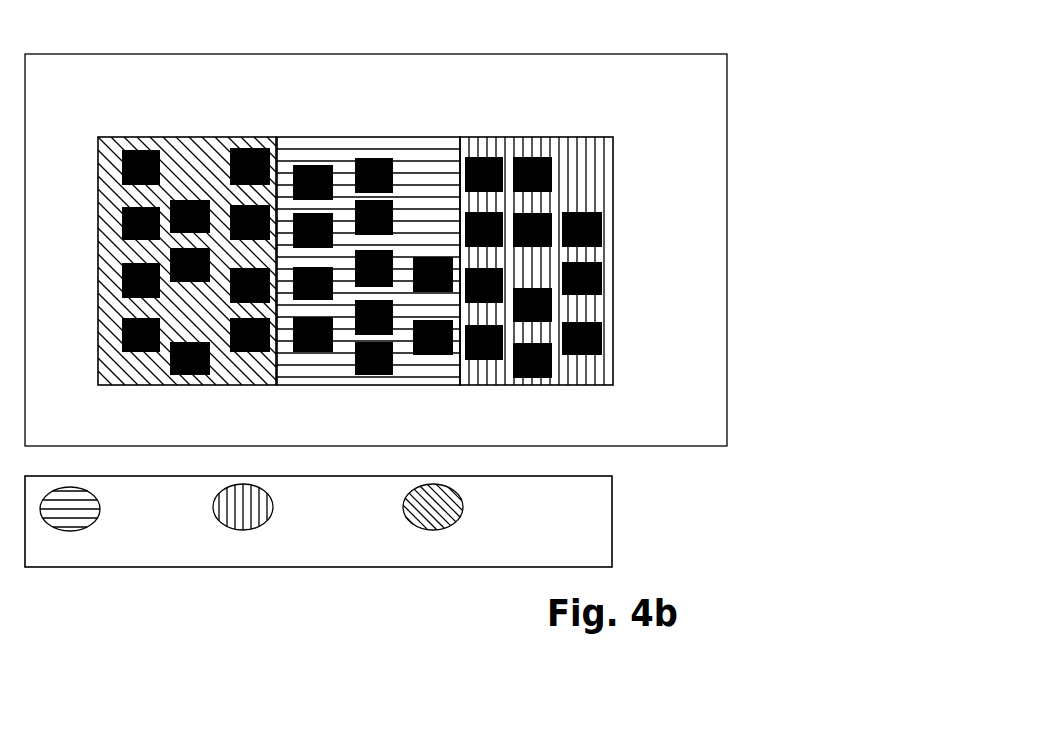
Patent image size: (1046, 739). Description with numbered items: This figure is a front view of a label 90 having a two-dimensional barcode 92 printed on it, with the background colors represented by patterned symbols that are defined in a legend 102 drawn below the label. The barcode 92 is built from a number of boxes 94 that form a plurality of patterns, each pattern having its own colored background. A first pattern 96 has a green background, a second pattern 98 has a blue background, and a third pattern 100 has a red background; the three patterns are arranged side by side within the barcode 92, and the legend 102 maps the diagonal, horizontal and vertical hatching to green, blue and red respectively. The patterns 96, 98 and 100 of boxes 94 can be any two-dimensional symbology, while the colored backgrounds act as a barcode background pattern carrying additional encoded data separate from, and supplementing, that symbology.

The label 90 is at (650, 40).
The two-dimensional barcode 92 is at (108, 106).
The boxes 94 is at (98, 183).
The first pattern 96 is at (179, 137).
The second pattern 98 is at (357, 137).
The third pattern 100 is at (524, 137).
The legend 102 is at (630, 494).